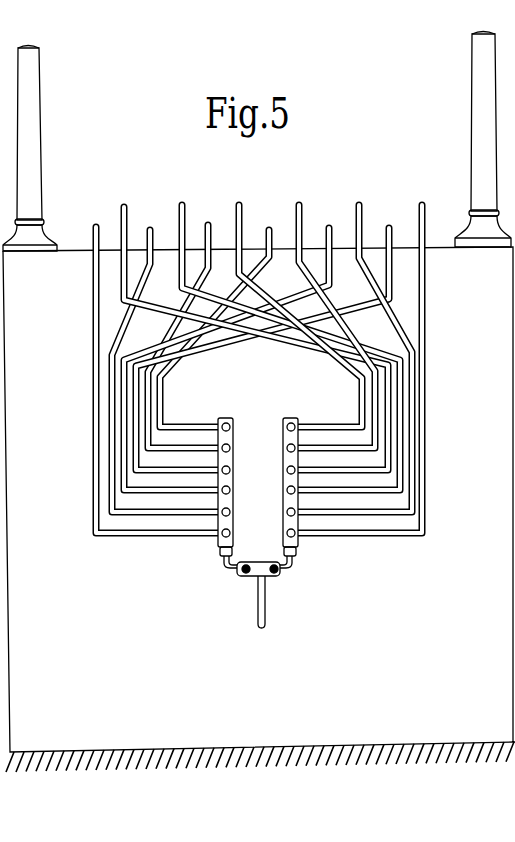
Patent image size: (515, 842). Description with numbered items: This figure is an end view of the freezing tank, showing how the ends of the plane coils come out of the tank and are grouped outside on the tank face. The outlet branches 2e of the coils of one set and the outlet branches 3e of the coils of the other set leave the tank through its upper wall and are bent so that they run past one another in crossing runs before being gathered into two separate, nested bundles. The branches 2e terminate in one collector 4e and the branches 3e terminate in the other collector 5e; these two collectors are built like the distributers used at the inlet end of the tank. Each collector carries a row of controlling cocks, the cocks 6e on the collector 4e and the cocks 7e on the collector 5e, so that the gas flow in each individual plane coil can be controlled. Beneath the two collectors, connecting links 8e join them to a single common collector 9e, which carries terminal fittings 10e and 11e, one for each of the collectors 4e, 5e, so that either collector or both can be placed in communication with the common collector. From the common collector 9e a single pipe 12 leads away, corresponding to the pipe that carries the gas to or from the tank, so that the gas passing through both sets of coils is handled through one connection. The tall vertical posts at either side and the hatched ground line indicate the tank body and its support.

The outlet branches of coils 2 2e is at (97, 455).
The outlet branches of coils 3 3e is at (424, 448).
The collector 4e is at (227, 418).
The collector 5e is at (287, 418).
The controlling cocks 6e is at (228, 531).
The controlling cocks 7e is at (287, 430).
The connecting links 8e is at (282, 557).
The single collector 9e is at (276, 577).
The left terminal 10e is at (244, 573).
The right terminal 11e is at (277, 573).
The inlet pipe 12 is at (260, 608).